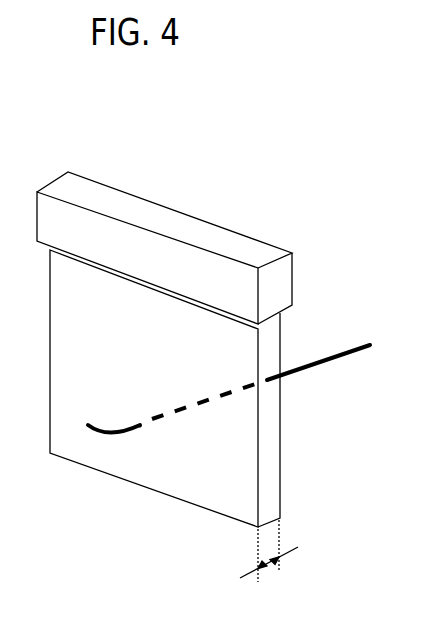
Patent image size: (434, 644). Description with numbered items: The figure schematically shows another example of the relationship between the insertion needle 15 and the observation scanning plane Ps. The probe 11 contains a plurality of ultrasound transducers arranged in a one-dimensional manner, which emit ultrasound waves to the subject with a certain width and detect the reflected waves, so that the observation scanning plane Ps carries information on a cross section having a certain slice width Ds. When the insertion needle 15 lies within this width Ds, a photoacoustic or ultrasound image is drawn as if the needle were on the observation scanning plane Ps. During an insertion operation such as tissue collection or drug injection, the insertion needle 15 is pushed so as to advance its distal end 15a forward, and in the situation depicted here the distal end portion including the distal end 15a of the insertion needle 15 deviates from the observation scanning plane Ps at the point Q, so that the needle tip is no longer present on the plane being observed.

The probe 11 is at (248, 245).
The insertion needle 15 is at (332, 352).
The distal end 15a is at (88, 424).
The observation scanning plane Ps is at (267, 437).
The turning point Q is at (140, 428).
The slice width Ds is at (269, 568).